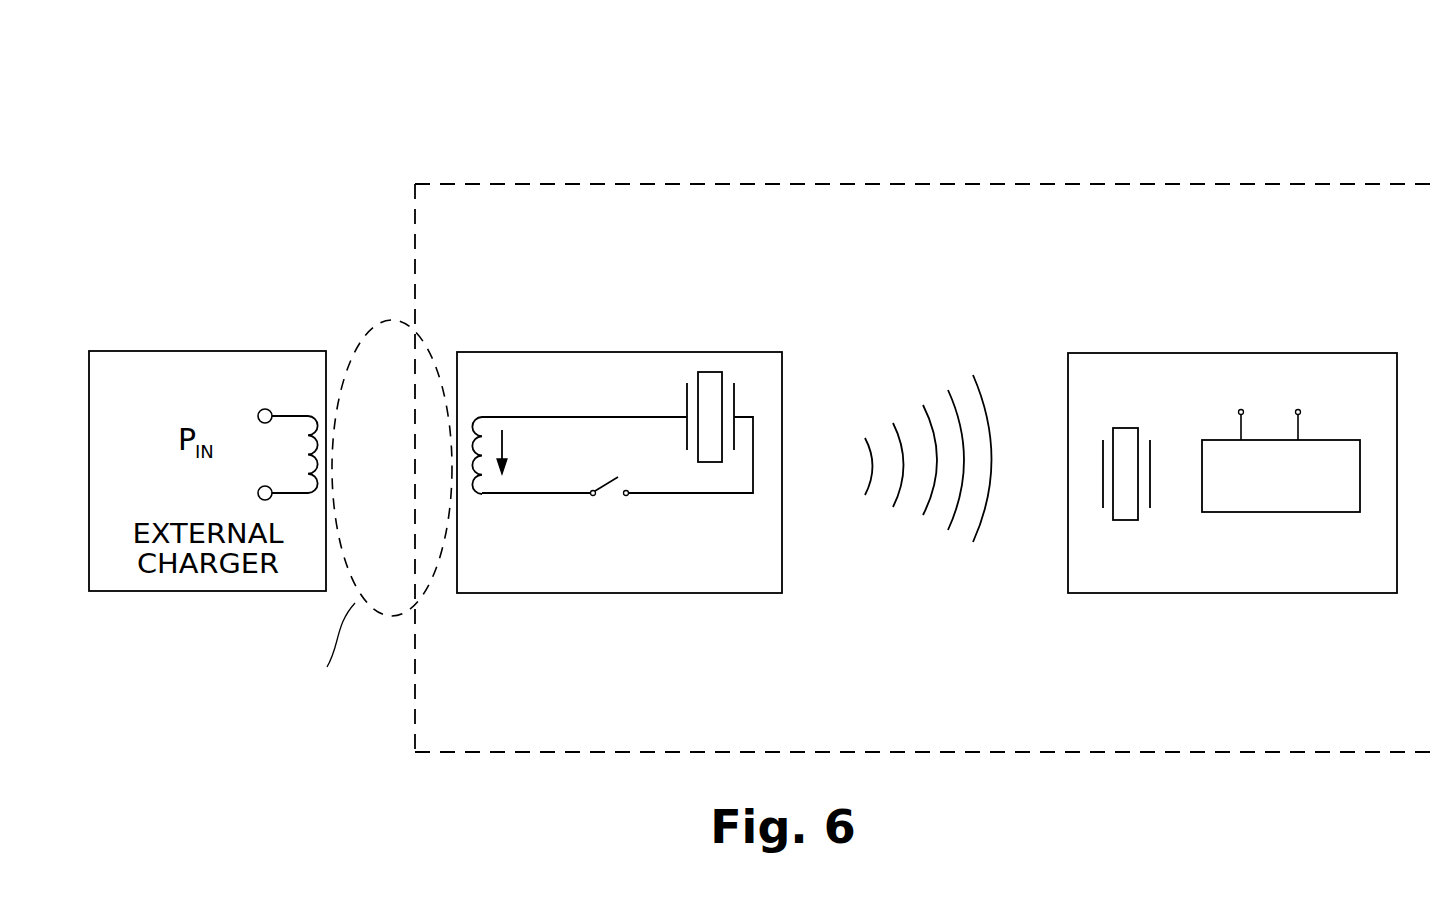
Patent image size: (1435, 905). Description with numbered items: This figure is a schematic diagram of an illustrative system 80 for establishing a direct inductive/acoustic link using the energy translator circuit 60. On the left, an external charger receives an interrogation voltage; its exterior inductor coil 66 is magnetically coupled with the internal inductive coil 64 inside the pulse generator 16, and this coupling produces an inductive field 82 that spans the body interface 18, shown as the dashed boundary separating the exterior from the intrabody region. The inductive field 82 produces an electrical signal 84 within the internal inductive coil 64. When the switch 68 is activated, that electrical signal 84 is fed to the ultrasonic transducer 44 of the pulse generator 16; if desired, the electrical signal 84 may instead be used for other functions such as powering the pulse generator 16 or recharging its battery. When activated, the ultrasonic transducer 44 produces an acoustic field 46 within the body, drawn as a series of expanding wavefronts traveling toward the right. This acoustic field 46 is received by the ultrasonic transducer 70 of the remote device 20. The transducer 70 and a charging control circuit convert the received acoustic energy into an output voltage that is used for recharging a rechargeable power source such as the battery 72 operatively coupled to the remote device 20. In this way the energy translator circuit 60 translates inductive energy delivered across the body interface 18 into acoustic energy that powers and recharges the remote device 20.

The system 80 is at (797, 97).
The body interface 18 is at (840, 184).
The inductive field 82 is at (383, 320).
The exterior inductor coil 66 is at (290, 415).
The internal inductive coil 64 is at (488, 417).
The pulse generator 16 is at (622, 352).
The ultrasonic transducer 44 is at (708, 372).
The electrical signal 84 is at (505, 436).
The switch 68 is at (603, 485).
The energy translator circuit 60 is at (687, 557).
The acoustic field 46 is at (923, 512).
The ultrasonic transducer 70 is at (1122, 428).
The remote device 20 is at (1272, 353).
The battery 72 is at (1273, 513).